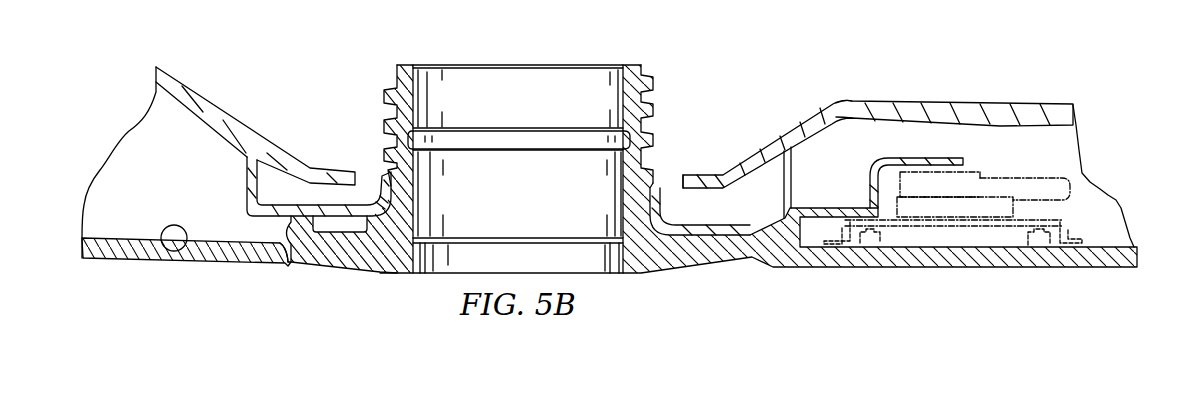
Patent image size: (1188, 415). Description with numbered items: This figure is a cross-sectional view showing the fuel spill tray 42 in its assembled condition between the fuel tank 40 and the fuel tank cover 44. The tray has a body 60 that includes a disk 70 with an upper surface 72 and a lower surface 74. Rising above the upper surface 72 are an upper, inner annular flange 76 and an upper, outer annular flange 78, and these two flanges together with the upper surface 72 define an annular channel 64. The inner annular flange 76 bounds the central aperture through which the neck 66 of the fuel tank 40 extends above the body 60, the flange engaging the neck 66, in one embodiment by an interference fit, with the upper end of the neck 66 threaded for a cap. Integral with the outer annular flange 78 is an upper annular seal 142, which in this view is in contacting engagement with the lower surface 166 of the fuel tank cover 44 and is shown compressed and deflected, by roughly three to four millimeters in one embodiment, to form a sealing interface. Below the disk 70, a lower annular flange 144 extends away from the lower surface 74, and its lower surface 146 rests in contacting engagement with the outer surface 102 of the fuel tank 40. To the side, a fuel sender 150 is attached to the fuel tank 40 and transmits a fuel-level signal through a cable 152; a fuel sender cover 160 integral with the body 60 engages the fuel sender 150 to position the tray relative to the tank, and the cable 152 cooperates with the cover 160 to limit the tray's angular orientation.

The fuel tank 40 is at (130, 266).
The fuel spill tray 42 is at (273, 145).
The fuel tank cover 44 is at (908, 150).
The body 60 is at (804, 236).
The annular channel 64 is at (768, 199).
The neck 66 is at (652, 66).
The disk 70 is at (675, 216).
The upper surface 72 is at (728, 186).
The lower surface 74 is at (353, 268).
The upper, inner annular flange 76 is at (388, 183).
The upper, outer annular flange 78 is at (247, 197).
The outer surface 102 is at (183, 251).
The upper annular seal 142 is at (228, 149).
The lower annular flange 144 is at (288, 265).
The lower surface 146 is at (312, 234).
The fuel sender 150 is at (982, 158).
The cable 152 is at (1080, 204).
The fuel sender cover 160 is at (943, 155).
The lower surface 166 is at (847, 127).